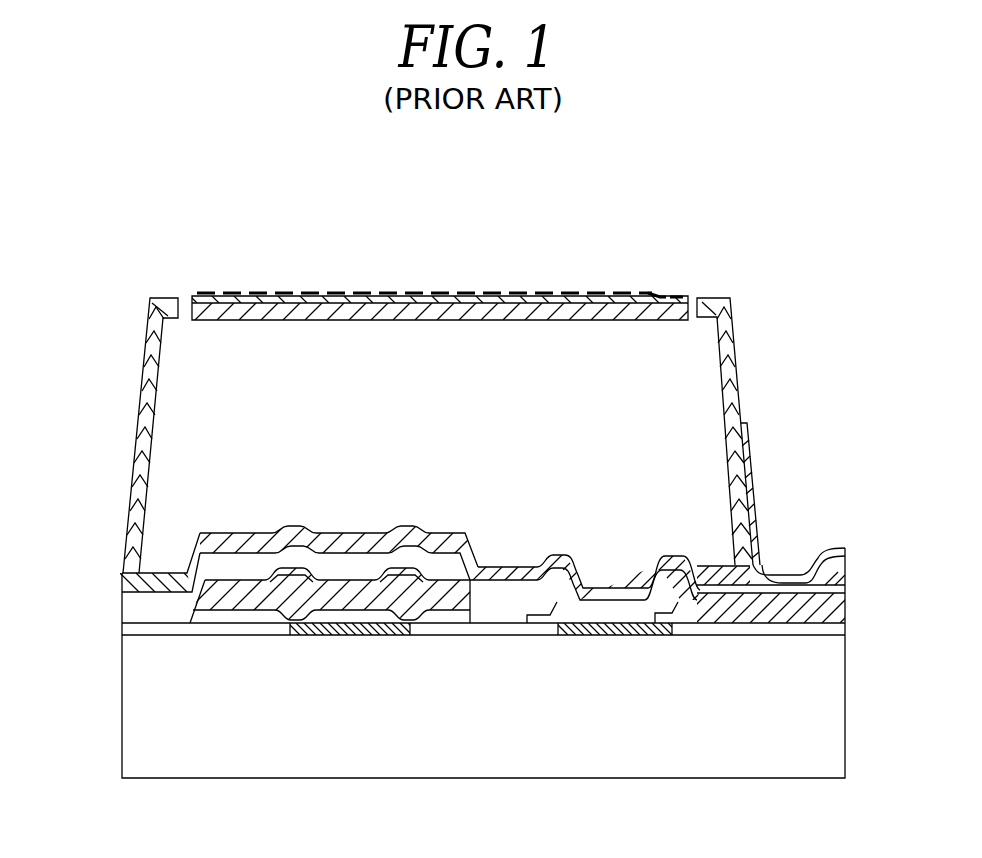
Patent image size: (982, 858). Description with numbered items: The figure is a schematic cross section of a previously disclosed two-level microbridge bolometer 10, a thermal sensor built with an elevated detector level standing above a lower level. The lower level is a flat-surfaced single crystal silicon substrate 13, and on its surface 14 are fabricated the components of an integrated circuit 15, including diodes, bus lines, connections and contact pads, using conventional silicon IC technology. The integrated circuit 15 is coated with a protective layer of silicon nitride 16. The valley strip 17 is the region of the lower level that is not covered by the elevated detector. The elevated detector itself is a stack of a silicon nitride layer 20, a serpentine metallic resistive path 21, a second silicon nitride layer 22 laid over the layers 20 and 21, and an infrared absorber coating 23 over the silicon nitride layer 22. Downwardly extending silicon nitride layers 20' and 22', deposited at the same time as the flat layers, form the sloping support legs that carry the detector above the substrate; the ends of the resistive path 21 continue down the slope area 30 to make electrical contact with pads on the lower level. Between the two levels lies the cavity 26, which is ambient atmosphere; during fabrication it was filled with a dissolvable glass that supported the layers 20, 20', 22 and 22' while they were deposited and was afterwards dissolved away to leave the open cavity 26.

The two-level bolometer 10 is at (533, 247).
The semiconductor substrate 13 is at (815, 707).
The surface of the silicon substrate 14 is at (155, 636).
The integrated circuit 15 is at (118, 590).
The protective layer of silicon nitride 16 is at (133, 583).
The valley strip 17 is at (790, 564).
The silicon nitride layer 20 is at (434, 266).
The downwardly extending silicon nitride layer 20' is at (438, 433).
The serpentine metallic resistive path 21 is at (390, 291).
The silicon nitride layer 22 is at (439, 257).
The downwardly extending silicon nitride layer 22' is at (445, 435).
The infrared absorber coating 23 is at (652, 293).
The cavity 26 is at (693, 371).
The slope area 30 is at (755, 462).